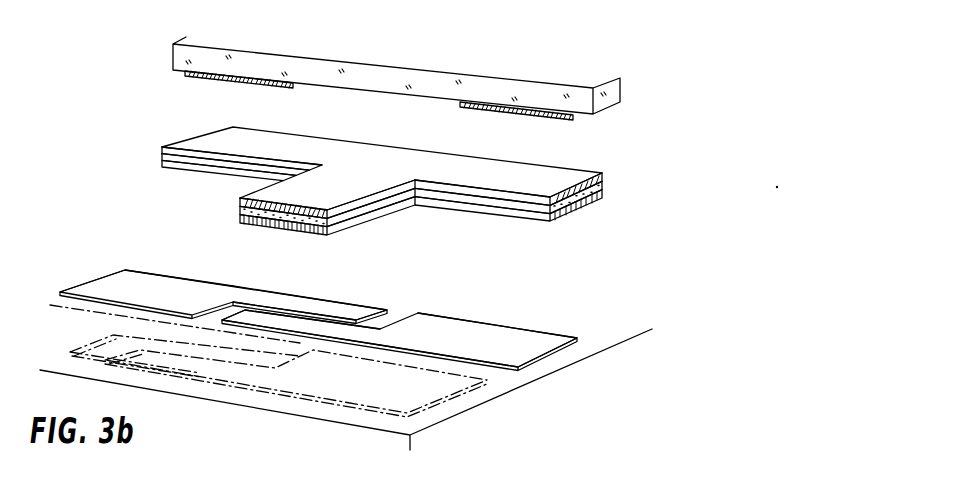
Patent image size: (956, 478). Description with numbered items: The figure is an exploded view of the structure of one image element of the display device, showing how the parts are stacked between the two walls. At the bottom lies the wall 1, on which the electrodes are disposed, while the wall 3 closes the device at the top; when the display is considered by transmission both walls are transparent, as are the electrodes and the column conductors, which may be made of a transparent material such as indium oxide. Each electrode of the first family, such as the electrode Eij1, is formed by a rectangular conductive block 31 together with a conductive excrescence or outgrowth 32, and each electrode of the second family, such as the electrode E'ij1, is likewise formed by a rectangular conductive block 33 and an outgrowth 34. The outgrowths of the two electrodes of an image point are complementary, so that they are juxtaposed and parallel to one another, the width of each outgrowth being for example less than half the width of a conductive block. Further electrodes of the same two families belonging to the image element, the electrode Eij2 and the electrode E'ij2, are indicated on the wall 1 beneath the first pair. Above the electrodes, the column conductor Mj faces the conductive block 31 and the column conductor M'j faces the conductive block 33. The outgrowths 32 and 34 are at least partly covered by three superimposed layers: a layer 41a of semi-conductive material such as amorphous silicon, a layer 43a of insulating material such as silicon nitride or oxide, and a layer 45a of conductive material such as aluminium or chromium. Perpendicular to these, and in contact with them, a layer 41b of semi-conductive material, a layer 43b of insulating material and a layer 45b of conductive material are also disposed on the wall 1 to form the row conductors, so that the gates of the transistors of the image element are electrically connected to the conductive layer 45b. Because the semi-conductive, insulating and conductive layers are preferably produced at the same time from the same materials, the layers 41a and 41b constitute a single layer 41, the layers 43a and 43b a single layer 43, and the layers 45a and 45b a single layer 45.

The wall 3 is at (618, 100).
The column conductor Mj is at (213, 82).
The column conductor M'j is at (516, 128).
The layer of conductive material 45b is at (161, 147).
The layer of insulating material 43b is at (160, 157).
The layer of semi-conductive material 41b is at (161, 163).
The layer of conductive material 45a is at (388, 193).
The layer of insulating material 43a is at (367, 208).
The layer of semi-conductive material 41a is at (352, 222).
The single conductive layer 45 is at (543, 203).
The single insulating layer 43 is at (527, 217).
The single semi-conductive layer 41 is at (500, 215).
The rectangular conductive block 31 is at (217, 253).
The outgrowth 32 is at (330, 304).
The rectangular conductive block 33 is at (560, 345).
The outgrowth 34 is at (279, 331).
The electrode of the first family Eij1 is at (97, 280).
The electrode of the second family E'ij1 is at (486, 332).
The electrode of the first family Eij2 is at (100, 331).
The electrode of the second family E'ij2 is at (330, 396).
The wall 1 is at (346, 389).